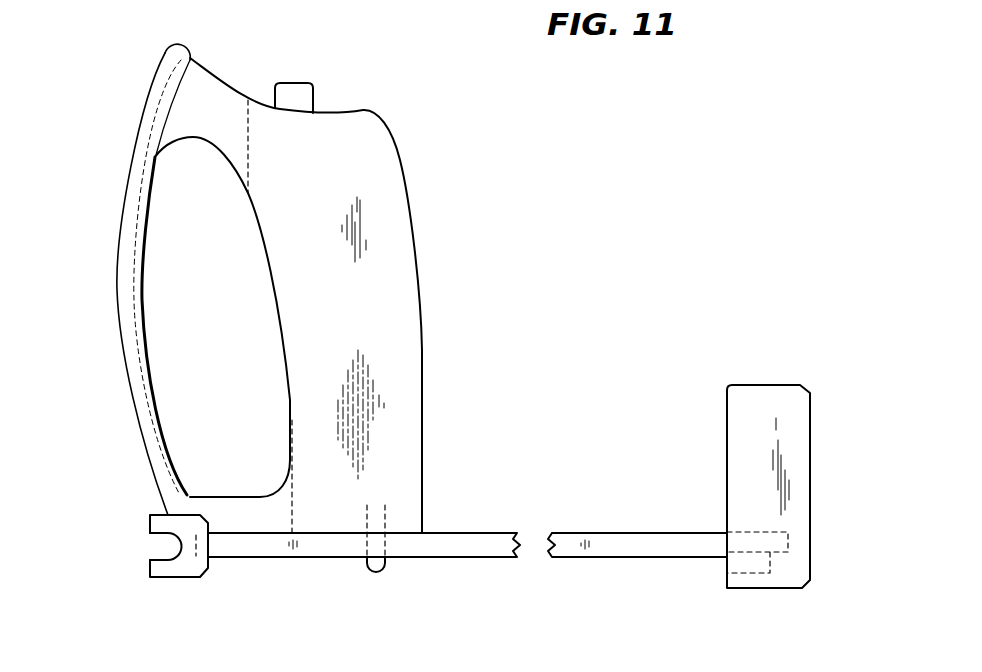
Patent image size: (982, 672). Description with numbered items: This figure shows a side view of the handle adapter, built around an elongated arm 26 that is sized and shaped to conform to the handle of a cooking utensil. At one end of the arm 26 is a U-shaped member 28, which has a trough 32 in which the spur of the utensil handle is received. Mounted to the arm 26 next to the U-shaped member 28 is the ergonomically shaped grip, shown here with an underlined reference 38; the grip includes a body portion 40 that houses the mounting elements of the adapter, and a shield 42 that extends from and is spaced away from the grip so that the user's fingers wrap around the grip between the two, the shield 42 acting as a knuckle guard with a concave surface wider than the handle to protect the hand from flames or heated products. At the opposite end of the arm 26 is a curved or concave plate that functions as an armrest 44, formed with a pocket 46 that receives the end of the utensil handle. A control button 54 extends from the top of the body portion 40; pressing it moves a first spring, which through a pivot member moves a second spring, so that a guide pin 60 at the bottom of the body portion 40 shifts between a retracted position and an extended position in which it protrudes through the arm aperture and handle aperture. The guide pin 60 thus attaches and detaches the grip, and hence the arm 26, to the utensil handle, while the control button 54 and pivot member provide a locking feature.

The elongated arm 26 is at (570, 532).
The U-shaped member 28 is at (163, 523).
The trough 32 is at (180, 543).
The handle 38 is at (342, 334).
The body portion 40 is at (407, 257).
The shield 42 is at (142, 156).
The armrest 44 is at (747, 467).
The pocket 46 is at (722, 565).
The control button 54 is at (315, 100).
The guide pin 60 is at (377, 542).